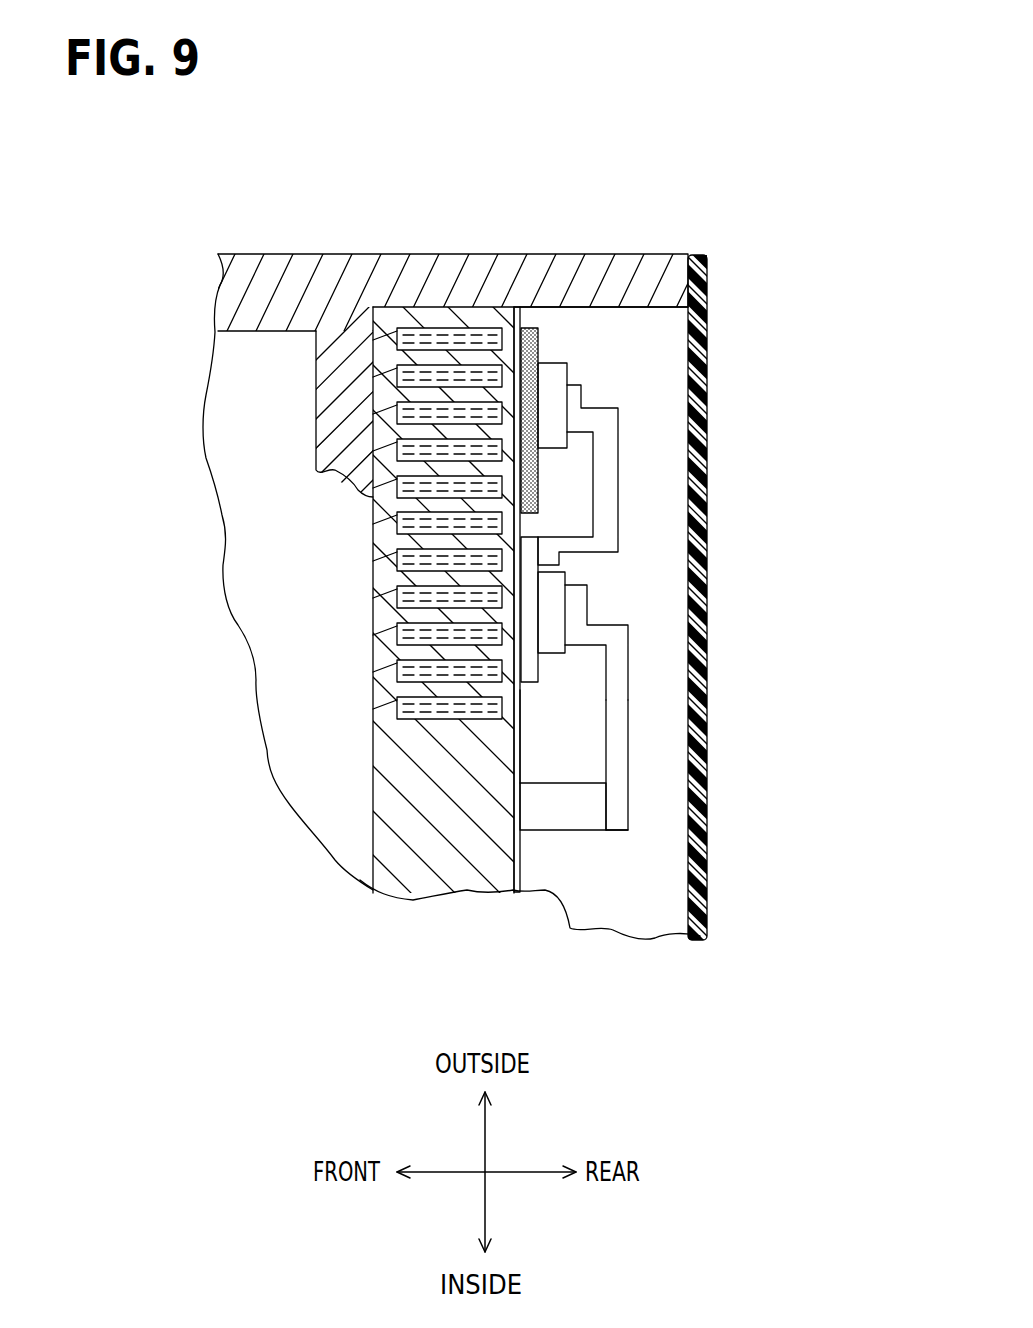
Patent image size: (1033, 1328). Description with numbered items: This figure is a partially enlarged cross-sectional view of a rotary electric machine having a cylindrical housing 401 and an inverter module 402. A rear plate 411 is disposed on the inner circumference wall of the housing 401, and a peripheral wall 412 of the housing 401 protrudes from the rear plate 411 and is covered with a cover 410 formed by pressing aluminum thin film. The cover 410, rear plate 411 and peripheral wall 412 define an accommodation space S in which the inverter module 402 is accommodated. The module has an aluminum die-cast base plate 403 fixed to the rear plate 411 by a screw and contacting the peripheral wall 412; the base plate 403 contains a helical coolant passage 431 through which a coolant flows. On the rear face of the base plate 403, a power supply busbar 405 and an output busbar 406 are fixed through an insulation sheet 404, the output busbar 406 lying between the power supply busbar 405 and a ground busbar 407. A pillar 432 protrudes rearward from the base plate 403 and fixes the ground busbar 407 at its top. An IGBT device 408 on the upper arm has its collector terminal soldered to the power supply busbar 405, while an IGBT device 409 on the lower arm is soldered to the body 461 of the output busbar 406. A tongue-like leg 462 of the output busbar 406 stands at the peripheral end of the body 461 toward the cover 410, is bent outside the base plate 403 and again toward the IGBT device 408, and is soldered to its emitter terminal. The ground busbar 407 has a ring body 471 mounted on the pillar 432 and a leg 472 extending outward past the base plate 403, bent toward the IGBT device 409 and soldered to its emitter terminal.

The housing 401 is at (310, 263).
The inverter module 402 is at (356, 605).
The base plate 403 is at (427, 887).
The insulation sheet 404 is at (520, 862).
The power supply busbar 405 is at (532, 332).
The output busbar 406 is at (535, 690).
The ground busbar 407 is at (656, 759).
The IGBT device 408 is at (555, 372).
The IGBT device 409 is at (558, 580).
The cover 410 is at (705, 347).
The rear plate 411 is at (327, 404).
The peripheral wall 412 is at (670, 268).
The coolant passage 431 is at (372, 717).
The pillar 432 is at (567, 815).
The body 461 is at (530, 545).
The leg 462 is at (607, 480).
The ring body 471 is at (618, 797).
The leg 472 is at (602, 632).
The accommodation space S is at (610, 845).